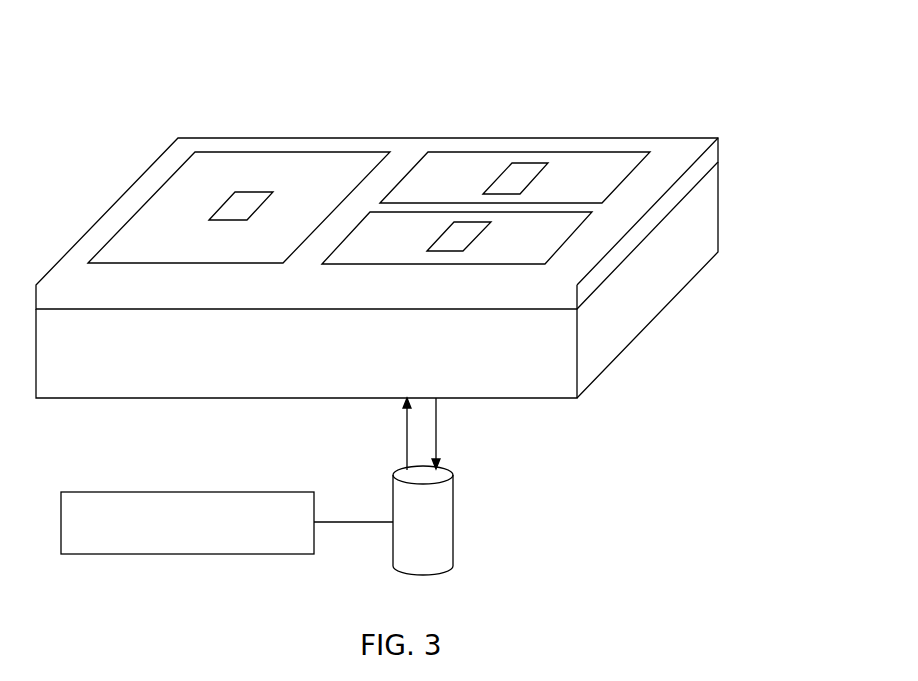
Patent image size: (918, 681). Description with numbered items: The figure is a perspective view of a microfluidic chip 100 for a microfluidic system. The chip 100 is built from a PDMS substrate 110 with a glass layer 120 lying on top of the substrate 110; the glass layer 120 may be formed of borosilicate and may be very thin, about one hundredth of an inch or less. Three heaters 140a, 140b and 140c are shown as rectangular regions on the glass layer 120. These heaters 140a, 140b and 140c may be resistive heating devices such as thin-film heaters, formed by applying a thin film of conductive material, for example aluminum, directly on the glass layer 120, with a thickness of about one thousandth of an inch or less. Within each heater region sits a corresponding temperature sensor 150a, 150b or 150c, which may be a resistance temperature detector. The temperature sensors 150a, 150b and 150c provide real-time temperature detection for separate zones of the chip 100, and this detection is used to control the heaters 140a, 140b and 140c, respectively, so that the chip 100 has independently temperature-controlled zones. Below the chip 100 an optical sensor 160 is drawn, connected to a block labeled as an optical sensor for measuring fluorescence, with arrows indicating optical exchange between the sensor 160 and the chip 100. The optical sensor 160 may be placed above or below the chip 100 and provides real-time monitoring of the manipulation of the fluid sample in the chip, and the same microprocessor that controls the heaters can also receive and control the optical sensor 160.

The microfluidic chip 100 is at (131, 57).
The PDMS substrate 110 is at (638, 308).
The glass layer 120 is at (712, 162).
The heater 140a is at (138, 248).
The heater 140b is at (600, 173).
The heater 140c is at (555, 223).
The temperature sensor 150a is at (242, 198).
The temperature sensor 150b is at (519, 179).
The temperature sensor 150c is at (462, 230).
The optical sensor 160 is at (443, 538).